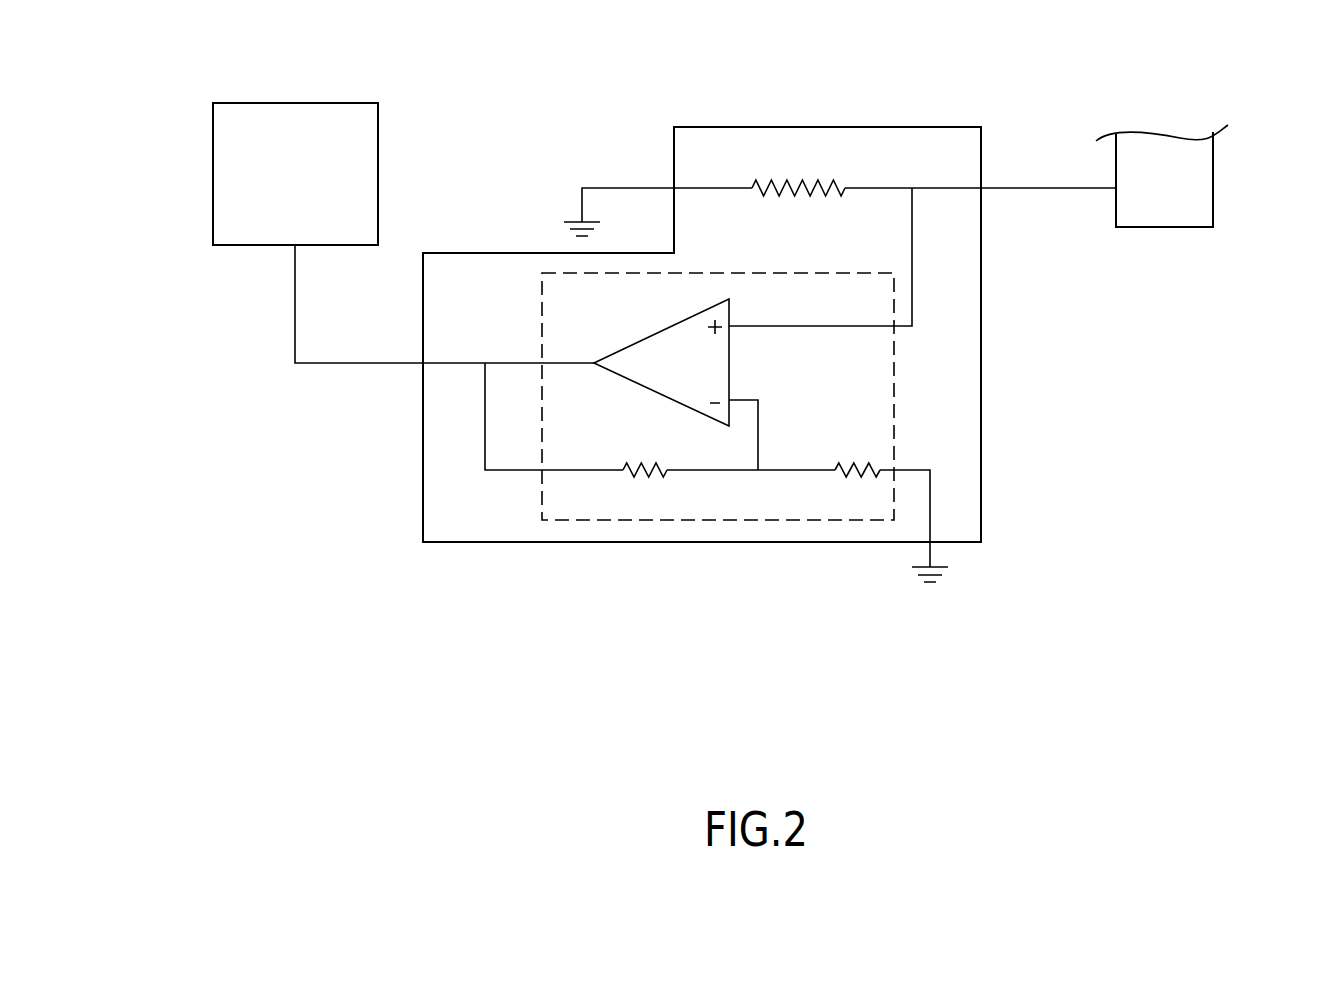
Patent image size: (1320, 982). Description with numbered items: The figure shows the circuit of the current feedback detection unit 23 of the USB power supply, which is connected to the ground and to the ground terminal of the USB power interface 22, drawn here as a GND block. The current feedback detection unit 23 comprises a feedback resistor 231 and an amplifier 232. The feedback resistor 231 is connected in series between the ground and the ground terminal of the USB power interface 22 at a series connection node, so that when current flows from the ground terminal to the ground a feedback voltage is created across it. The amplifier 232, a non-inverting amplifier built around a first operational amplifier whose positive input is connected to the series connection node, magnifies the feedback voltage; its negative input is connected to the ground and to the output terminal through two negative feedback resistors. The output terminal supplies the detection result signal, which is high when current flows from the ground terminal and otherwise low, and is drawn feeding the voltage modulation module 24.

The USB power interface 22 is at (1205, 194).
The current feedback detection unit 23 is at (975, 514).
The voltage modulation module 24 is at (218, 216).
The feedback resistor 231 is at (790, 186).
The amplifier 232 is at (894, 393).